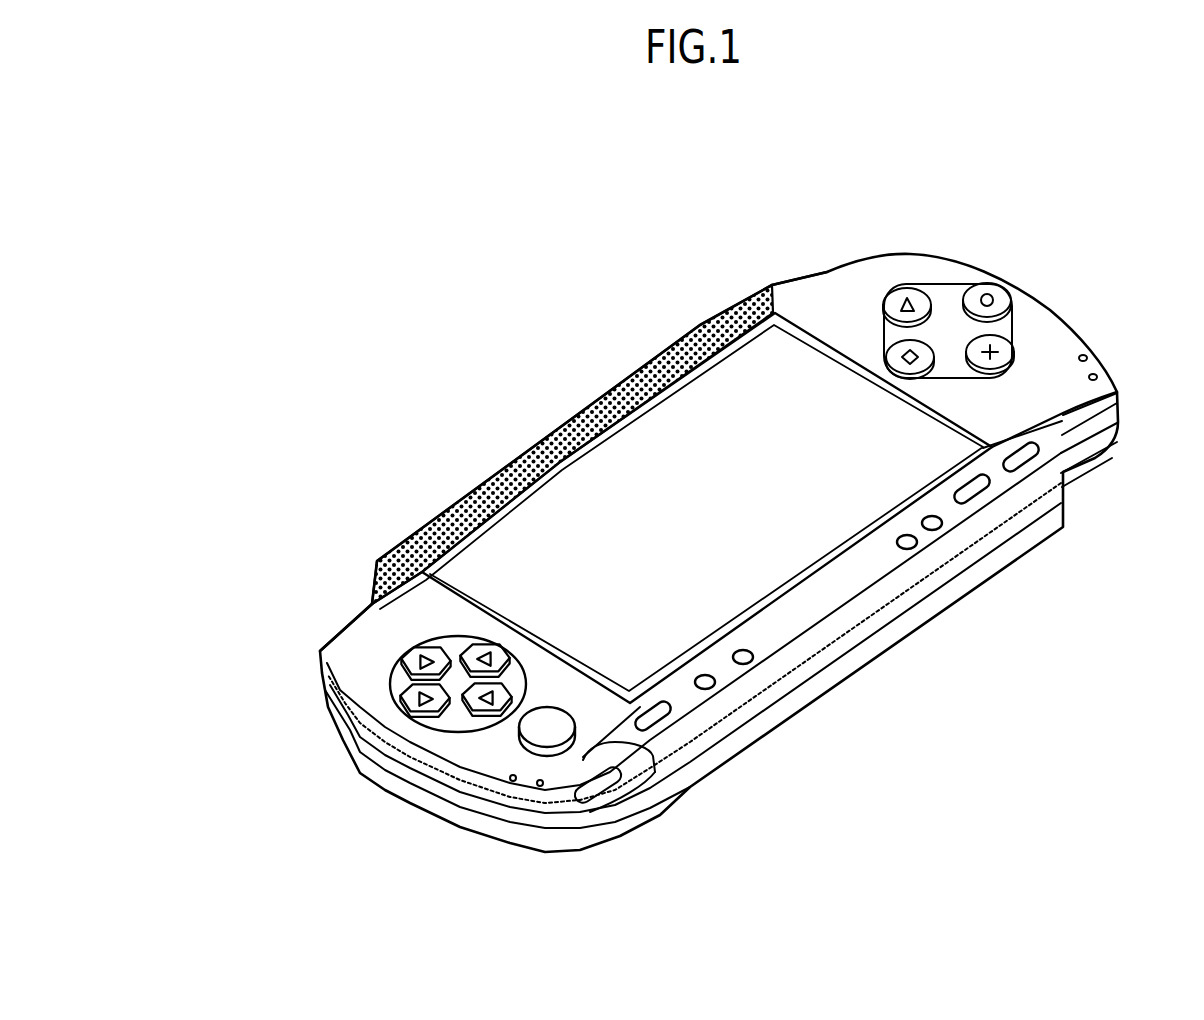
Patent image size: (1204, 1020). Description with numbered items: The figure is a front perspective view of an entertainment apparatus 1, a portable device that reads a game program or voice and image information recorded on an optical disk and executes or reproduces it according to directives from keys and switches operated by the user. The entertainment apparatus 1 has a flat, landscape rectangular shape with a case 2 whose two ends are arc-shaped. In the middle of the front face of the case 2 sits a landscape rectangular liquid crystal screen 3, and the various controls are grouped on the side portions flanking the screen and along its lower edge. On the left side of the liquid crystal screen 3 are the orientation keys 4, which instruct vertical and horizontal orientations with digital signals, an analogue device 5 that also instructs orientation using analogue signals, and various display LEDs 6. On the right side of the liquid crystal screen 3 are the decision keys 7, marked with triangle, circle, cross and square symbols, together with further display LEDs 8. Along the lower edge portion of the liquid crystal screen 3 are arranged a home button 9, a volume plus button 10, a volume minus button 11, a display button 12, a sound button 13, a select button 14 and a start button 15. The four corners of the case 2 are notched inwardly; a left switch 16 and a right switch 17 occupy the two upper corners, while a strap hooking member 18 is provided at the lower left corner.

The entertainment apparatus 1 is at (447, 356).
The case 2 is at (874, 268).
The liquid crystal screen 3 is at (636, 430).
The orientation keys 4 is at (482, 706).
The analogue device 5 is at (563, 750).
The display LEDs 6 is at (539, 786).
The decision keys 7 is at (1015, 345).
The display LEDs 8 is at (1098, 377).
The home button 9 is at (666, 718).
The volume (+) button 10 is at (706, 689).
The volume (−) button 11 is at (746, 662).
The display button 12 is at (909, 547).
The sound button 13 is at (936, 529).
The select button 14 is at (975, 495).
The start button 15 is at (1022, 462).
The left switch 16 is at (333, 625).
The right switch 17 is at (828, 275).
The strap hooking member 18 is at (615, 800).